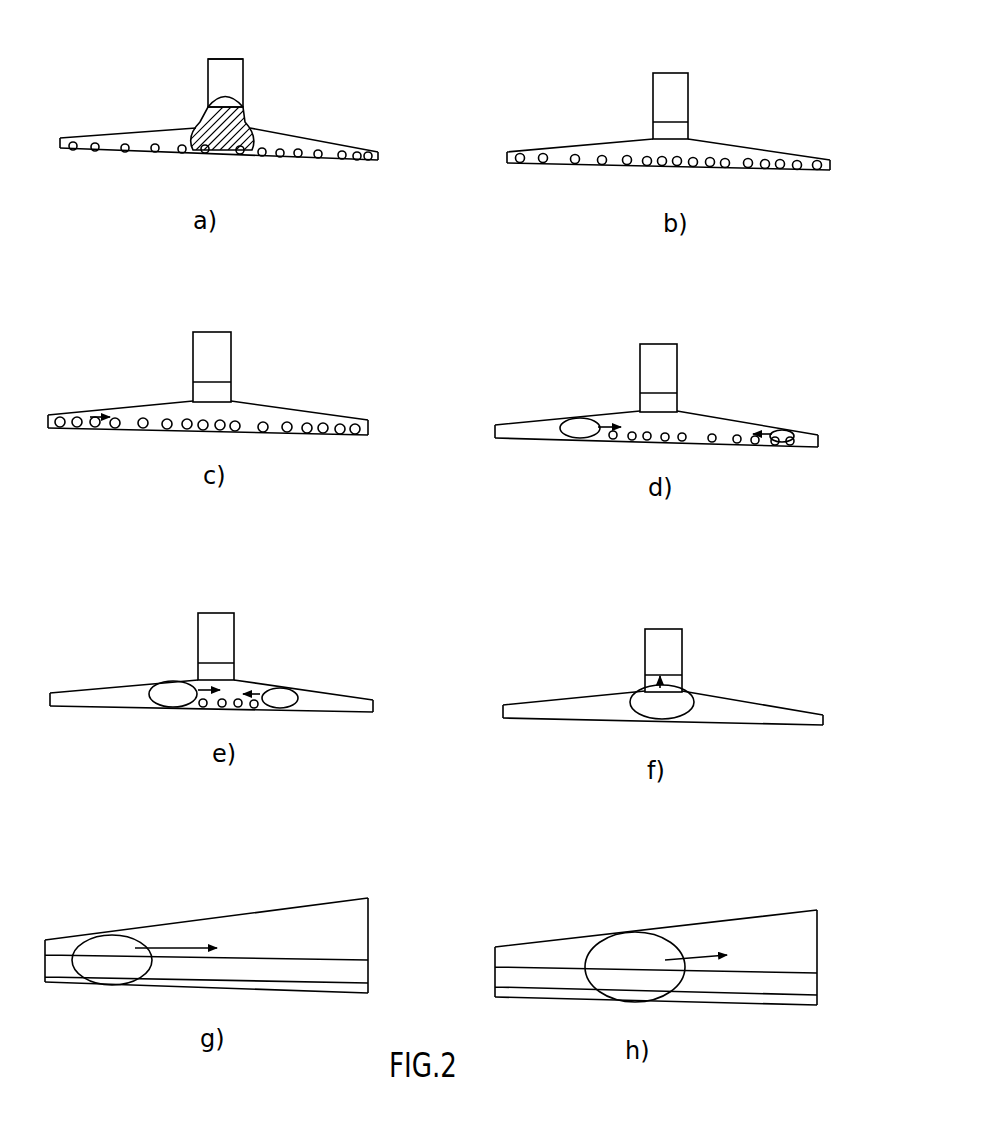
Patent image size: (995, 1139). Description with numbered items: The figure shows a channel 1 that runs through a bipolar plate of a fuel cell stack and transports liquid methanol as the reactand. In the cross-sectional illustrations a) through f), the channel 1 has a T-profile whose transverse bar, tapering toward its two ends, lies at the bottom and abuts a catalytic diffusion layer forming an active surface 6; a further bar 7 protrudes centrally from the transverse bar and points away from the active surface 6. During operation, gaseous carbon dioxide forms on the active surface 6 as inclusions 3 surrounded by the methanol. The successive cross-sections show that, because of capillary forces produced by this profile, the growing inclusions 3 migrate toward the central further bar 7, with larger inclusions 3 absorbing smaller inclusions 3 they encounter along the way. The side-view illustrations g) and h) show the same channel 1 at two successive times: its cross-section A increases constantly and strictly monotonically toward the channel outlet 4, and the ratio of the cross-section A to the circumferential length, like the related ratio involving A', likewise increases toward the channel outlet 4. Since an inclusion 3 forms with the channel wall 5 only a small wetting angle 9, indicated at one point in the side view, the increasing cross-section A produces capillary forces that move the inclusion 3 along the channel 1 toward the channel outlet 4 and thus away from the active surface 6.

The channel 1 is at (250, 375).
The inclusions 3 is at (362, 150).
The channel outlet 4 is at (370, 930).
The channel wall 5 is at (128, 130).
The active surface 6 is at (270, 162).
The stem / rib 7 is at (185, 85).
The direction indicator 9 is at (168, 950).
The cross-section A is at (254, 49).
The cross-section ratio quantity A' is at (244, 114).